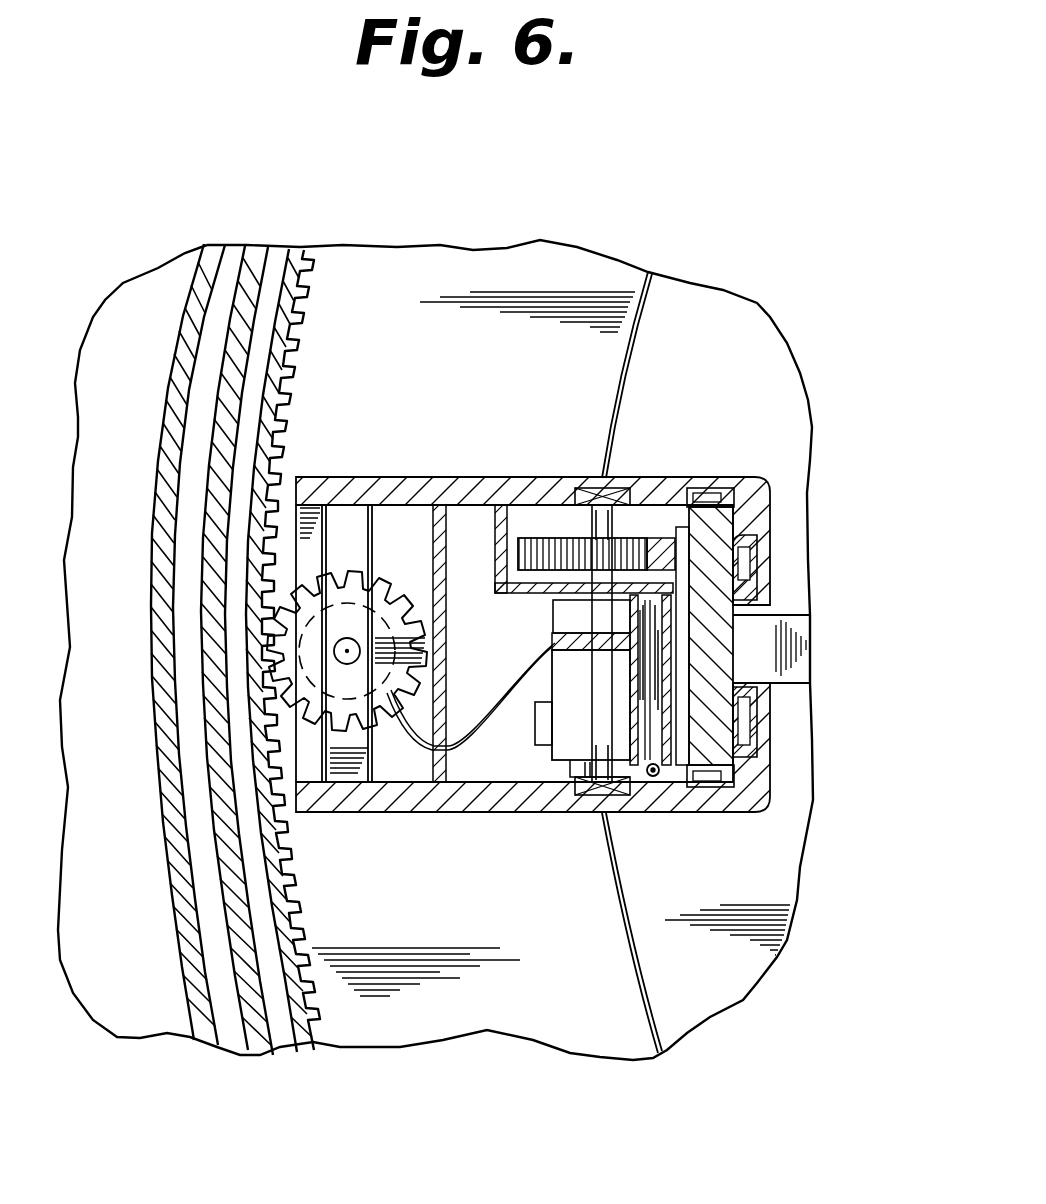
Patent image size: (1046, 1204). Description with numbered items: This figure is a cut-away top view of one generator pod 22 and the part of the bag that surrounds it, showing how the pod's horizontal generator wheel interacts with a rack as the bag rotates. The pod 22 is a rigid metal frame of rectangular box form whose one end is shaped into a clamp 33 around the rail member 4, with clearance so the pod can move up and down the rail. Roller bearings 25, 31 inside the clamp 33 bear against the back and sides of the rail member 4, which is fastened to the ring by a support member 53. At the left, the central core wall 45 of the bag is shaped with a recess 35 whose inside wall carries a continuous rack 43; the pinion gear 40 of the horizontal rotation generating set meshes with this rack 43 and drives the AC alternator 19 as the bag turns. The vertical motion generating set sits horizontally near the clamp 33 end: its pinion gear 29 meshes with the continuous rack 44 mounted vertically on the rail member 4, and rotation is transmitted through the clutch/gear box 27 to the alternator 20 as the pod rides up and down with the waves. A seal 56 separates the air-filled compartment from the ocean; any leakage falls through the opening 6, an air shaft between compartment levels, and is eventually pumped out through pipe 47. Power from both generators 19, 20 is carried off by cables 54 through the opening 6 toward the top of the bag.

The rail member 4 is at (713, 648).
The opening 6 is at (633, 728).
The AC alternator 19 is at (250, 678).
The AC alternator 20 is at (548, 790).
The generator pod 22 is at (457, 523).
The roller bearings 25 is at (717, 492).
The clutch/gear box 27 is at (552, 635).
The pinion gear 29 is at (548, 545).
The roller bearings 31 is at (747, 565).
The clamp 33 is at (792, 481).
The recess 35 is at (400, 1010).
The pinion gear 40 is at (293, 608).
The continuous rack 43 is at (307, 310).
The continuous rack 44 is at (662, 530).
The central core wall 45 is at (207, 245).
The pipe 47 is at (653, 777).
The support member 53 is at (790, 637).
The cables 54 is at (655, 670).
The seal 56 is at (590, 588).